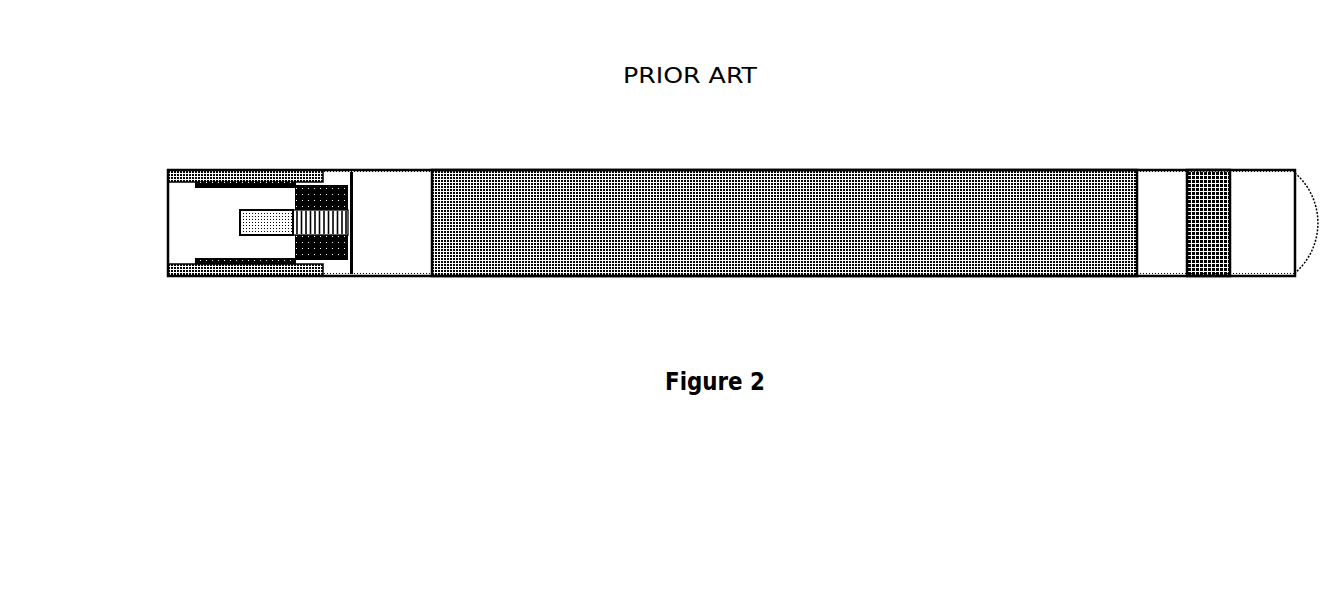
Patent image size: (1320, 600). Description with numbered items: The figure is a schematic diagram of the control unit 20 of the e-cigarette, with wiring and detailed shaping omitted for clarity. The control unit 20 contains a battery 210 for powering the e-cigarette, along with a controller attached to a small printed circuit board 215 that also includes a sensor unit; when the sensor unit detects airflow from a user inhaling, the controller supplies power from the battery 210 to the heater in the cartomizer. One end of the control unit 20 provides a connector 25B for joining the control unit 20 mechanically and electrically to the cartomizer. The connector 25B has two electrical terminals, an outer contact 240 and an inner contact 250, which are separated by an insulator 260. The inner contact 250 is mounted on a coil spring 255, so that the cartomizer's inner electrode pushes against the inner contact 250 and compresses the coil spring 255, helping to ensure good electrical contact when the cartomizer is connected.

The control unit 20 is at (853, 293).
The battery 210 is at (785, 222).
The printed circuit board 215 is at (1208, 222).
The connector 25B is at (263, 170).
The outer contact 240 is at (182, 270).
The inner contact 250 is at (267, 222).
The coil spring 255 is at (320, 222).
The insulator 260 is at (320, 185).